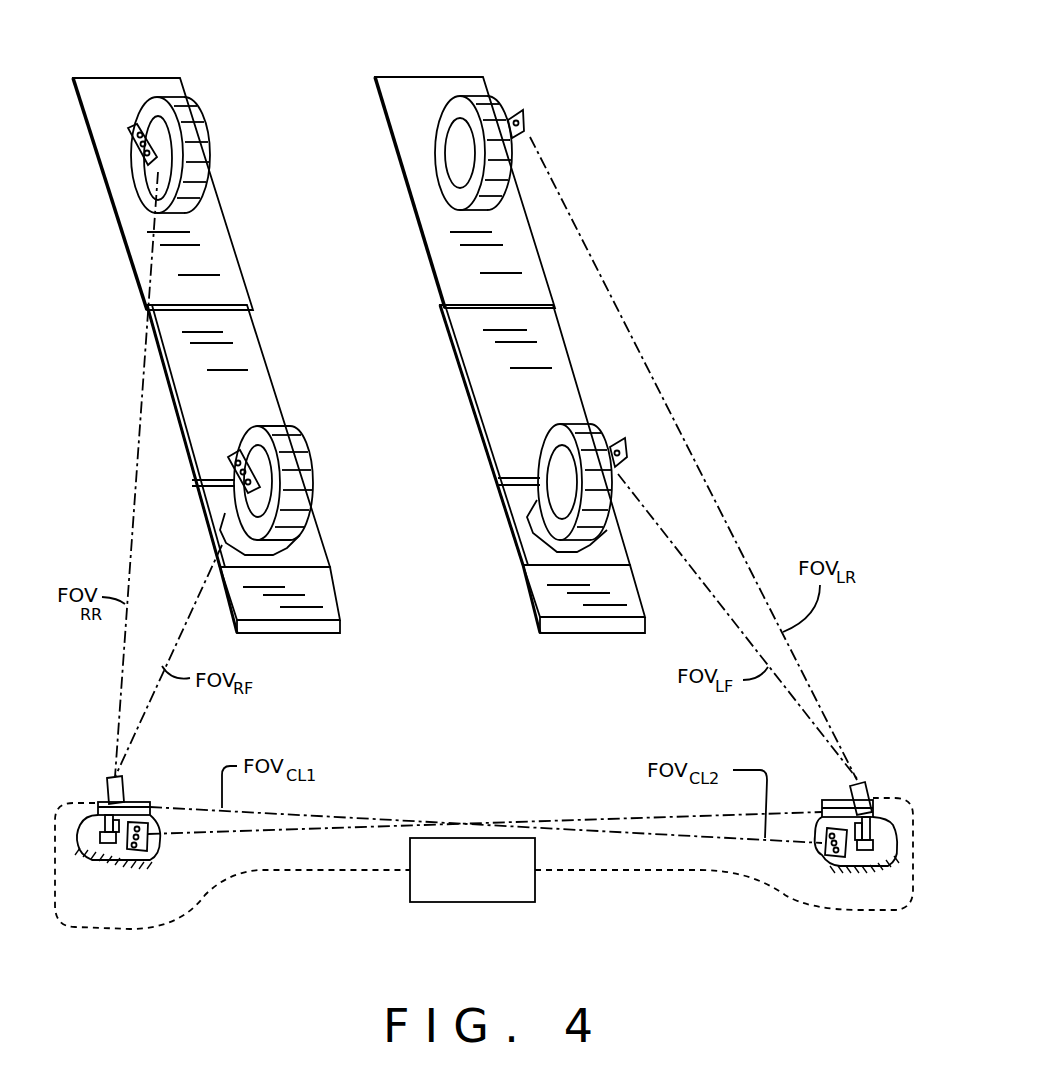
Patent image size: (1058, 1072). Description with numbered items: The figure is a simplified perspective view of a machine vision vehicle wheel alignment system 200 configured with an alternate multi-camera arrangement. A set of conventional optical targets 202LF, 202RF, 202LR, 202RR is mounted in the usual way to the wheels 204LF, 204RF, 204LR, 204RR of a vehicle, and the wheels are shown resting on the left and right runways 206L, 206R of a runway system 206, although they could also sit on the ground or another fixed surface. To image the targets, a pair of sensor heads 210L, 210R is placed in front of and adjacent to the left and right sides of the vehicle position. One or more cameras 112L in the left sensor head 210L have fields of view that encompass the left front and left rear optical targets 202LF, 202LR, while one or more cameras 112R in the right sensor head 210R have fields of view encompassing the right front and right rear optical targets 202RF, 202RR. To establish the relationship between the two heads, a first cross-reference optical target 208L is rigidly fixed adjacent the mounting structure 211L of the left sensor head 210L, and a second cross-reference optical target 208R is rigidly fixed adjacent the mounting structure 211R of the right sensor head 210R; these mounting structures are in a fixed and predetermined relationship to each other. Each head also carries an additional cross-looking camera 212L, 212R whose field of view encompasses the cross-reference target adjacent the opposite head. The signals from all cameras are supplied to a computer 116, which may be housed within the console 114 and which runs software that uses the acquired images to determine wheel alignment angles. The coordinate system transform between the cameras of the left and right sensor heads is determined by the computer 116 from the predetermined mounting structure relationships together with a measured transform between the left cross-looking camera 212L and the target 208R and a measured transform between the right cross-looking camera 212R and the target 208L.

The right rear wheel 204RR is at (178, 103).
The left rear wheel 204LR is at (487, 107).
The right front wheel 204RF is at (285, 430).
The left front wheel 204LF is at (593, 438).
The right rear optical target 202RR is at (132, 133).
The left rear optical target 202LR is at (524, 118).
The right front optical target 202RF is at (233, 457).
The left front optical target 202LF is at (628, 450).
The runway system 206 is at (354, 90).
The right runway 206R is at (217, 283).
The left runway 206L is at (460, 276).
The camera 112R is at (105, 788).
The camera 112L is at (867, 794).
The cross-looking camera 212R is at (137, 797).
The cross-looking camera 212L is at (832, 805).
The second cross-reference optical target 208R is at (143, 847).
The first cross-reference optical target 208L is at (827, 866).
The mounting structure 211R is at (108, 843).
The mounting structure 211L is at (863, 850).
The right sensor head 210R is at (94, 845).
The left sensor head 210L is at (878, 862).
The computer 116 is at (527, 857).
The console 114 is at (548, 880).
The machine vision vehicle wheel alignment system 200 is at (710, 949).